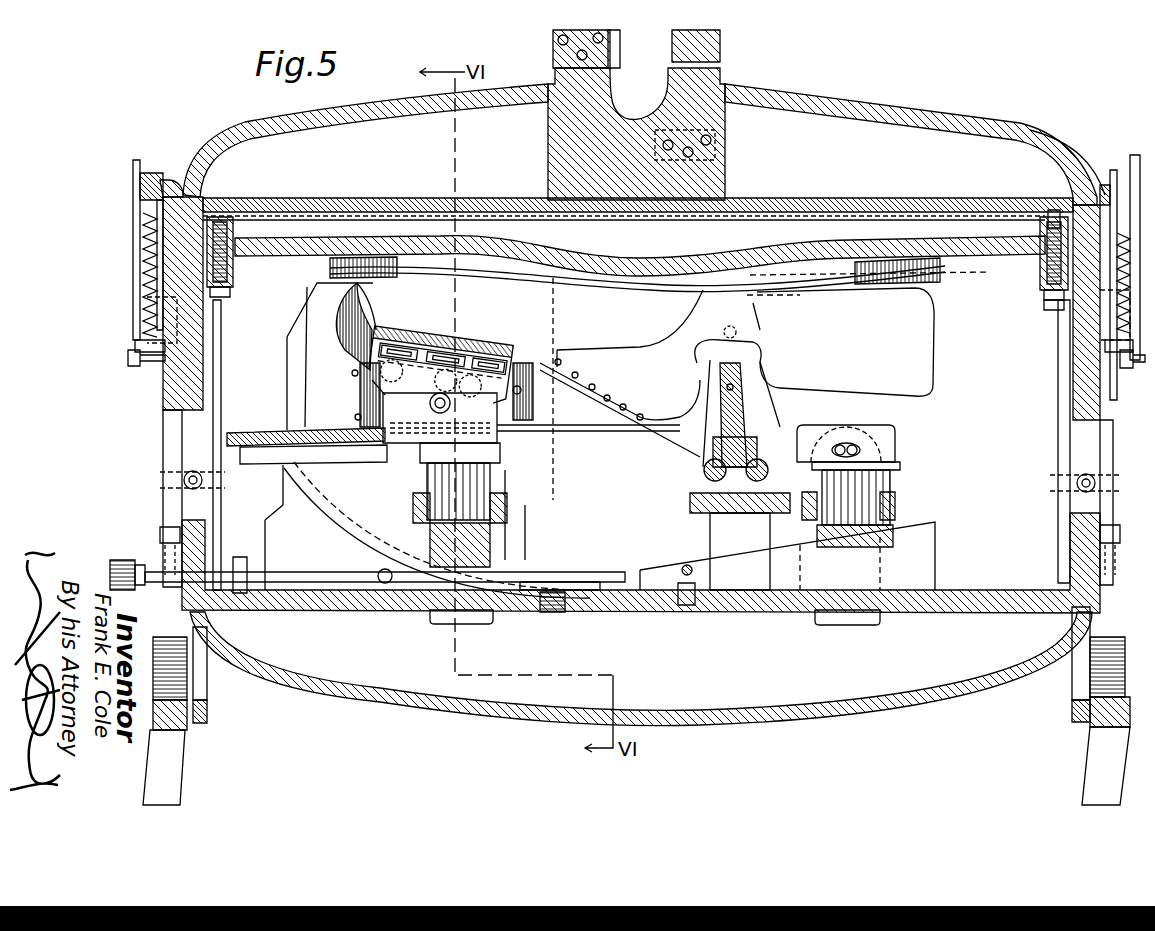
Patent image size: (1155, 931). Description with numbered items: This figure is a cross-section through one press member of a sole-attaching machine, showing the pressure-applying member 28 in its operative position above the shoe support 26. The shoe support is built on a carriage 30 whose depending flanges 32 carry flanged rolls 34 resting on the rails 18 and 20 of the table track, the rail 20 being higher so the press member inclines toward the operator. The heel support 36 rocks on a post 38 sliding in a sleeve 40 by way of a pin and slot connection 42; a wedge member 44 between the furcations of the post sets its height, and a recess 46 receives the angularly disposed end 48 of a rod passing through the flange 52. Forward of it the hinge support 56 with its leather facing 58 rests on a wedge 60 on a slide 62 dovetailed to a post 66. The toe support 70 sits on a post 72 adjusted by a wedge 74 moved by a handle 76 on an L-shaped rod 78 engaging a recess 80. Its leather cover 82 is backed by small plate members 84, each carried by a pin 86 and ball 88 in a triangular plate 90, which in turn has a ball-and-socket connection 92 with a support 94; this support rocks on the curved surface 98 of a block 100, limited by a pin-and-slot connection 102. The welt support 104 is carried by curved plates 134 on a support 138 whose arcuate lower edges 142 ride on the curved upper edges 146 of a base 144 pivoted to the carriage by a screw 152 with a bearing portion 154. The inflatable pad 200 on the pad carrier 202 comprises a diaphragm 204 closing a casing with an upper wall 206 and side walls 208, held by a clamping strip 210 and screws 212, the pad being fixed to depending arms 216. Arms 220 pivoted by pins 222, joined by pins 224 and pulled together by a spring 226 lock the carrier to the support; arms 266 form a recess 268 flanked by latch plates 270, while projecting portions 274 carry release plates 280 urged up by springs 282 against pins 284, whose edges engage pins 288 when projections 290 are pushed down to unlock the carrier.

The rail 18 is at (185, 732).
The rail 20 is at (1100, 730).
The shoe support 26 is at (482, 759).
The pressure-applying member 28 is at (840, 78).
The carriage 30 is at (720, 708).
The depending flanges 32 is at (208, 712).
The flanged rolls 34 is at (168, 655).
The heel support 36 is at (897, 437).
The post 38 is at (893, 478).
The sleeve 40 is at (895, 497).
The pin and slot connection 42 is at (846, 443).
The wedge member 44 is at (925, 540).
The recess 46 is at (684, 605).
The angularly disposed end 48 is at (687, 565).
The flange 52 is at (190, 520).
The hinge support 56 is at (745, 390).
The facing 58 is at (742, 362).
The wedge 60 is at (748, 475).
The slide 62 is at (704, 468).
The post 66 is at (712, 528).
The toe support 70 is at (497, 328).
The post 72 is at (492, 473).
The wedge 74 is at (513, 540).
The handle 76 is at (120, 572).
The L-shaped rod 78 is at (250, 592).
The recess 80 is at (384, 584).
The leather cover 82 is at (400, 335).
The plate members 84 is at (450, 340).
The pin 86 is at (425, 345).
The ball 88 is at (345, 338).
The triangular plates 90 is at (352, 360).
The ball-and-socket connection 92 is at (352, 376).
The support 94 is at (383, 384).
The curved surface 98 is at (413, 415).
The block 100 is at (503, 410).
The pin-and-slot connection 102 is at (452, 408).
The welt support 104 is at (276, 356).
The curved plates 134 is at (261, 433).
The support 138 is at (274, 475).
The arcuate lower edges 142 is at (280, 492).
The base 144 is at (283, 530).
The curved upper edges 146 is at (330, 512).
The screw 152 is at (552, 612).
The bearing portion 154 is at (560, 585).
The inflatable pressure applying pad 200 is at (960, 273).
The pad carrier 202 is at (388, 100).
The diaphragm 204 is at (935, 255).
The upper wall 206 is at (845, 220).
The side walls 208 is at (236, 226).
The clamping strip 210 is at (1050, 292).
The screws 212 is at (1052, 212).
The depending arms 216 is at (185, 395).
The arms 220 is at (212, 432).
The pins 222 is at (170, 553).
The pins 224 is at (184, 483).
The spring 226 is at (188, 474).
The arms 266 is at (553, 60).
The recess 268 is at (640, 100).
The latch plates 270 is at (620, 40).
The outwardly projecting portions 274 is at (168, 185).
The release plates 280 is at (140, 320).
The springs 282 is at (150, 245).
The pins 284 is at (145, 348).
The pins 288 is at (135, 358).
The projections 290 is at (135, 165).